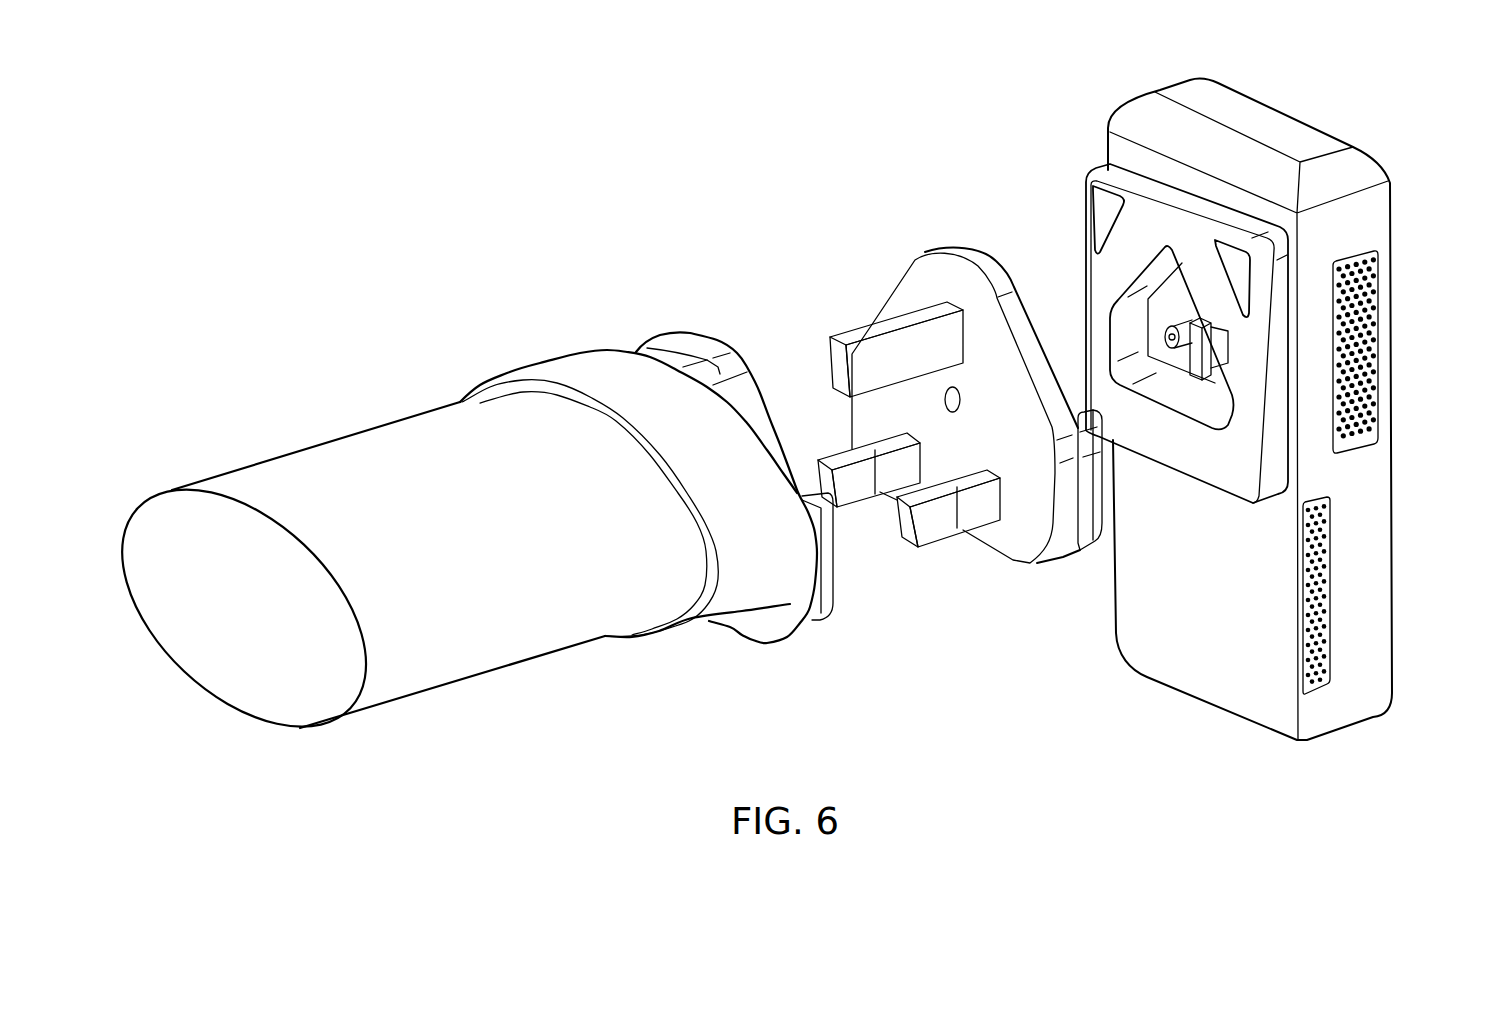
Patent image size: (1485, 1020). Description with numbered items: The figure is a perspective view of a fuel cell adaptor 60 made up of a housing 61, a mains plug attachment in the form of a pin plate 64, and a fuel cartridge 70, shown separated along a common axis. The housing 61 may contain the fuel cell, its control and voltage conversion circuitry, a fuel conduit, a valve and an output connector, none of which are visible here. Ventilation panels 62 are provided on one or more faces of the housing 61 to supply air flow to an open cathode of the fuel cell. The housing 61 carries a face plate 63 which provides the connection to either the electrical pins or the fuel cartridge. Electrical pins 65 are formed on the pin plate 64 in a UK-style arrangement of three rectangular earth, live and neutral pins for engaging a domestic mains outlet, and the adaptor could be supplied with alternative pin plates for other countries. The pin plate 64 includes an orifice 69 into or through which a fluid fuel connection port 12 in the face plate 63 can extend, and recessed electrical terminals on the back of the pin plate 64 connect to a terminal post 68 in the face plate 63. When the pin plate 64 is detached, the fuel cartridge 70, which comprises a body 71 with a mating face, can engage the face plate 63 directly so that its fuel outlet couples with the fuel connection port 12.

The fuel cell adaptor 60 is at (613, 171).
The housing 61 is at (1293, 132).
The ventilation panels 62 is at (1373, 333).
The face plate 63 is at (1123, 260).
The fluid fuel connection port 12 is at (1163, 337).
The pin plate 64 is at (950, 258).
The electrical pins 65 is at (843, 338).
The terminal post 68 is at (1197, 373).
The orifice 69 is at (953, 412).
The fuel cartridge 70 is at (545, 710).
The body 71 is at (333, 472).